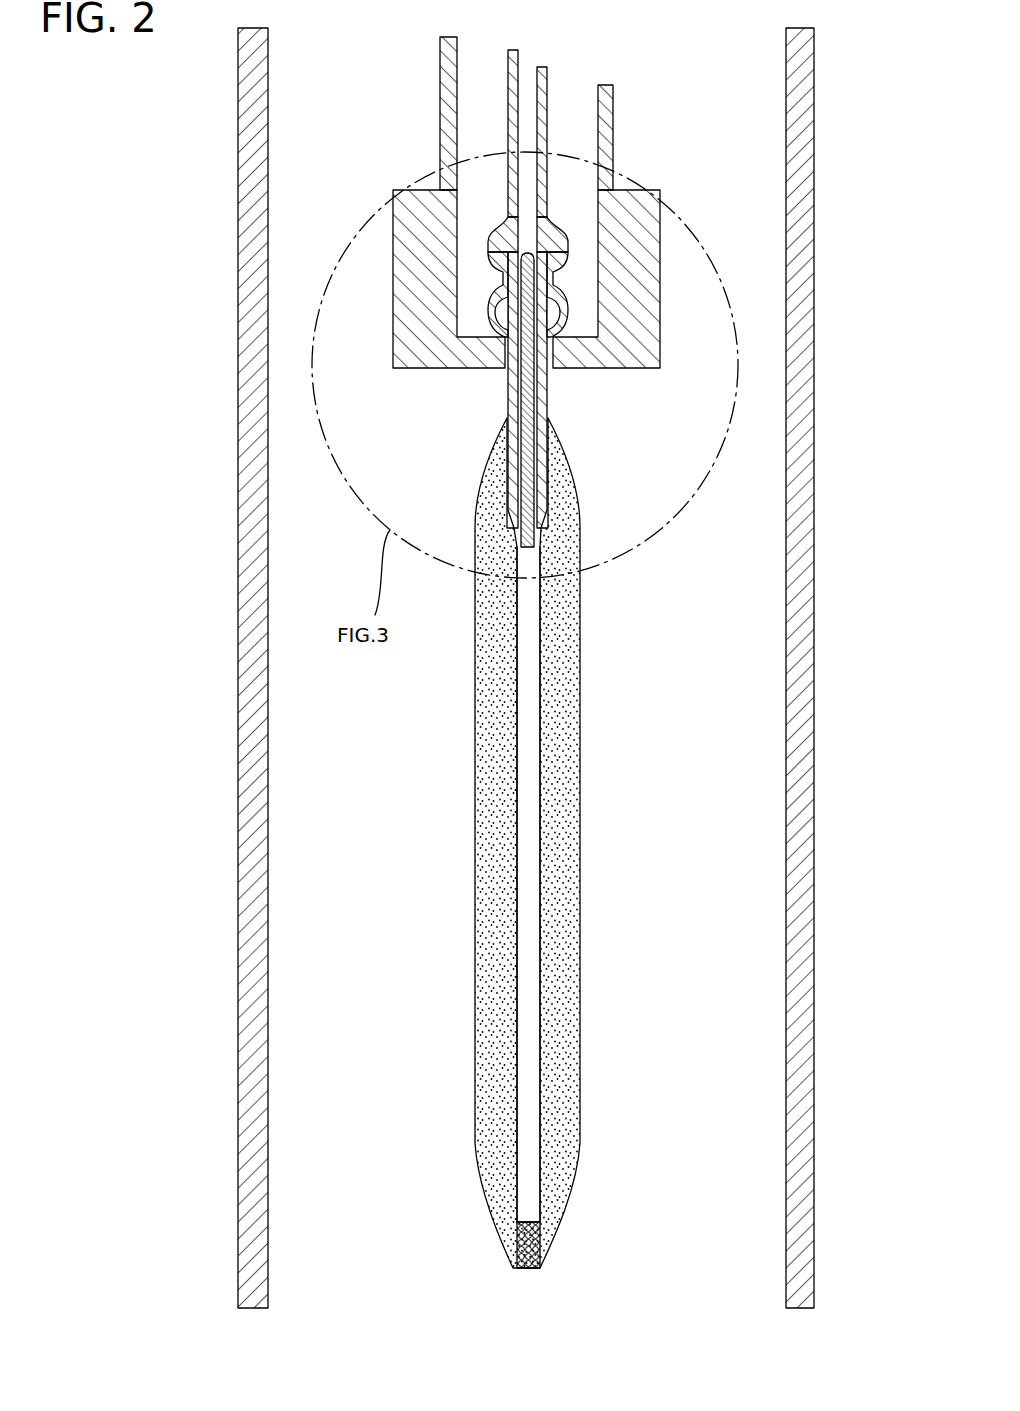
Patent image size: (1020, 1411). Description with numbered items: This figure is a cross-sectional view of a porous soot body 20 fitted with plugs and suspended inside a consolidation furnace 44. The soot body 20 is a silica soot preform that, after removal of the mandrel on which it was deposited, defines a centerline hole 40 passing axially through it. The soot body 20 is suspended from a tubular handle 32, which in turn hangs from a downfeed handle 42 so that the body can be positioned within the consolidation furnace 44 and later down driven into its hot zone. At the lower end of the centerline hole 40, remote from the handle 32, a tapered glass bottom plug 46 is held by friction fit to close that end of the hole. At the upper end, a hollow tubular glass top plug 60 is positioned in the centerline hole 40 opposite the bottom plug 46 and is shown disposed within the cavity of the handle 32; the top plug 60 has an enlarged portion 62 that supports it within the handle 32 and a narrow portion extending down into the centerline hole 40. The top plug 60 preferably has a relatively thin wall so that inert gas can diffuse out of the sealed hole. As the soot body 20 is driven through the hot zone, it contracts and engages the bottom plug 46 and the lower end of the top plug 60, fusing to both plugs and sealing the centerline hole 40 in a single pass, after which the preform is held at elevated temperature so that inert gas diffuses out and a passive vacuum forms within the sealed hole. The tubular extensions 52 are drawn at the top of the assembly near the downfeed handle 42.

The soot body 20 is at (558, 657).
The handle 32 is at (547, 388).
The centerline hole 40 is at (527, 782).
The downfeed handle 42 is at (653, 218).
The consolidation furnace 44 is at (814, 480).
The bottom plug 46 is at (528, 1268).
The tubular extensions 52 is at (549, 110).
The top plug 60 is at (550, 315).
The enlarged portion 62 is at (550, 492).